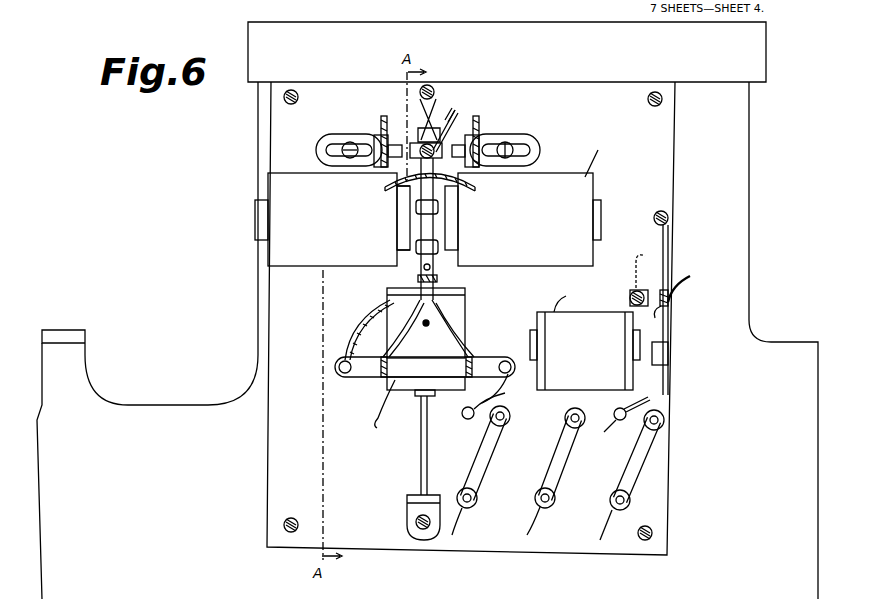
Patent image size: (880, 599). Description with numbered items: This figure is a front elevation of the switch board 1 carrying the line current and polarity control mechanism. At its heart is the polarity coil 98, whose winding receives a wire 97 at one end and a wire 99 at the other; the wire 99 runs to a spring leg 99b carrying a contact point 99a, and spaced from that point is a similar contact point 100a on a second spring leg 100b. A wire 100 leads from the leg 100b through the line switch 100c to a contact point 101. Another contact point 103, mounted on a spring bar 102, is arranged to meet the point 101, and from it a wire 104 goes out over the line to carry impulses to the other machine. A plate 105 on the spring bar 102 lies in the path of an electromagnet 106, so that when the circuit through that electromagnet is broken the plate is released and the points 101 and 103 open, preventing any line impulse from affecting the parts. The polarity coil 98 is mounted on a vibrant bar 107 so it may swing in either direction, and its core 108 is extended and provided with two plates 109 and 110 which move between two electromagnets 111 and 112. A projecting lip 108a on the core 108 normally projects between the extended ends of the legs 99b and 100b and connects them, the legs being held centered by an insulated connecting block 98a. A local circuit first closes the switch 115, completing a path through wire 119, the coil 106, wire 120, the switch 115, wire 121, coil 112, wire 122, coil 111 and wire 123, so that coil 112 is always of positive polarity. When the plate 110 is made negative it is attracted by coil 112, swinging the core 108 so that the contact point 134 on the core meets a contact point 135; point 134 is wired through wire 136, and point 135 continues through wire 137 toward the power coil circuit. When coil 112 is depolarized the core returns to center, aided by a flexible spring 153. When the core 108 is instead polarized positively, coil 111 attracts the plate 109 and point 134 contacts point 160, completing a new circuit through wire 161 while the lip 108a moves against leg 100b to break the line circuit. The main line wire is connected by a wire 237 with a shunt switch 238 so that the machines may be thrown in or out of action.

The frame 1 is at (178, 410).
The wire 97 is at (378, 425).
The polarity coil 98 is at (392, 382).
The insulated connecting block 98a is at (427, 314).
The wire 99 is at (360, 335).
The contact point 99a is at (412, 300).
The spring leg 99b is at (418, 330).
The wire 100 is at (555, 389).
The contact point 100a is at (440, 302).
The spring leg 100b is at (462, 340).
The line switch 100c is at (484, 462).
The contact point 101 is at (630, 297).
The spring bar 102 is at (668, 262).
The contact point 103 is at (665, 318).
The wire 104 is at (690, 278).
The plate 105 is at (660, 370).
The electromagnet 106 is at (612, 381).
The vibrant bar 107 is at (427, 468).
The core 108 is at (430, 252).
The projecting lip 108a is at (420, 278).
The plate 109 is at (418, 218).
The plate 110 is at (438, 220).
The electromagnet 111 is at (308, 258).
The electromagnet 112 is at (540, 262).
The switch 115 is at (560, 466).
The wire 119 is at (613, 422).
The wire 120 is at (524, 356).
The wire 121 is at (598, 160).
The wire 122 is at (470, 188).
The wire 123 is at (272, 176).
The contact point 134 is at (465, 117).
The contact point 135 is at (460, 146).
The wire 136 is at (447, 116).
The wire 137 is at (480, 120).
The flexible spring 153 is at (433, 110).
The contact point 160 is at (398, 140).
The wire 161 is at (380, 121).
The wire 237 is at (648, 399).
The shunt switch 238 is at (640, 468).